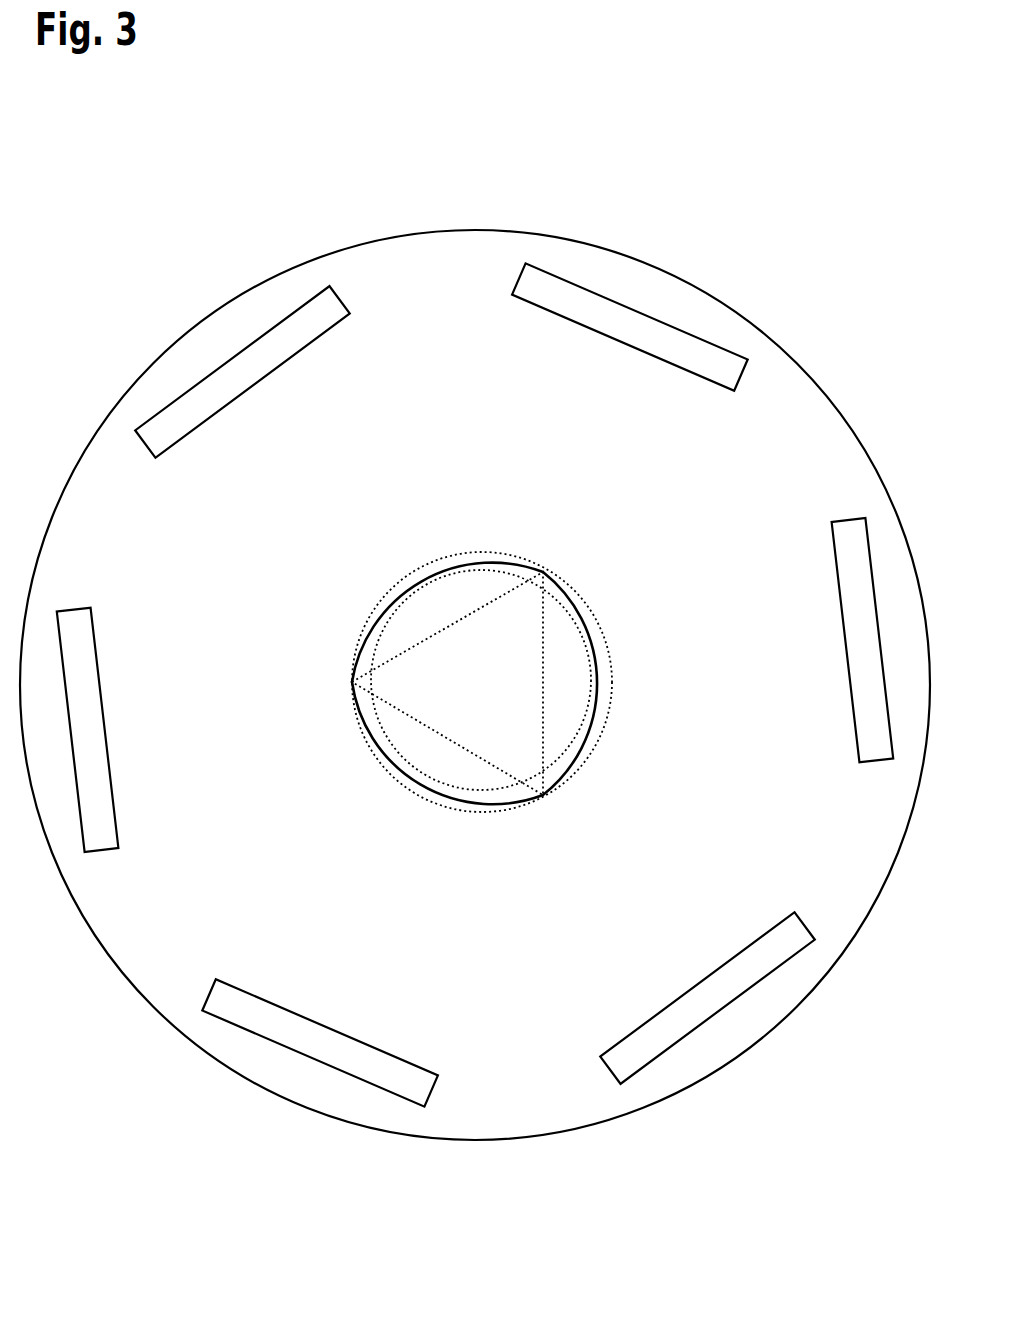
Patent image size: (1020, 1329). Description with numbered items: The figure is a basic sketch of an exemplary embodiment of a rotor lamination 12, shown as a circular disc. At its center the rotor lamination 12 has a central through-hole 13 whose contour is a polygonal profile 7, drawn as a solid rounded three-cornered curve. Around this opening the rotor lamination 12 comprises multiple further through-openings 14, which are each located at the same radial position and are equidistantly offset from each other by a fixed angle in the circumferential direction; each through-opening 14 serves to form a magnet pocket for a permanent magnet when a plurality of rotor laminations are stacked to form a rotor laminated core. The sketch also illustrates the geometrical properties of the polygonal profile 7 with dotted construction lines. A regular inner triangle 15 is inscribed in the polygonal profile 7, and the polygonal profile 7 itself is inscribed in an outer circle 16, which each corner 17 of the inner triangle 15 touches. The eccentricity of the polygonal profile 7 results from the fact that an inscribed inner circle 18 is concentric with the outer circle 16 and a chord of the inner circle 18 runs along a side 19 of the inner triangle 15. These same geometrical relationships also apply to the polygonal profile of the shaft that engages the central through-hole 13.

The rotor lamination 12 is at (826, 247).
The through-opening 14 is at (240, 355).
The central through-hole 13 is at (497, 692).
The polygonal profile 7 is at (566, 565).
The inner triangle 15 is at (556, 637).
The outer circle 16 is at (603, 737).
The corner 17 is at (545, 570).
The inner circle 18 is at (515, 578).
The side 19 is at (460, 618).